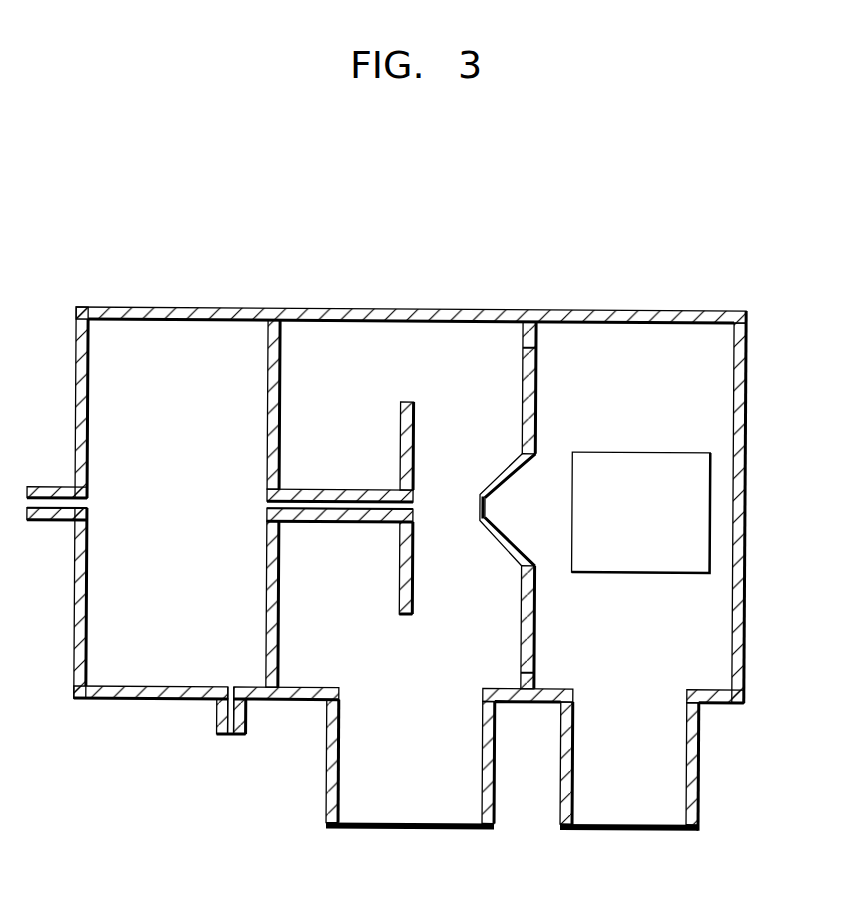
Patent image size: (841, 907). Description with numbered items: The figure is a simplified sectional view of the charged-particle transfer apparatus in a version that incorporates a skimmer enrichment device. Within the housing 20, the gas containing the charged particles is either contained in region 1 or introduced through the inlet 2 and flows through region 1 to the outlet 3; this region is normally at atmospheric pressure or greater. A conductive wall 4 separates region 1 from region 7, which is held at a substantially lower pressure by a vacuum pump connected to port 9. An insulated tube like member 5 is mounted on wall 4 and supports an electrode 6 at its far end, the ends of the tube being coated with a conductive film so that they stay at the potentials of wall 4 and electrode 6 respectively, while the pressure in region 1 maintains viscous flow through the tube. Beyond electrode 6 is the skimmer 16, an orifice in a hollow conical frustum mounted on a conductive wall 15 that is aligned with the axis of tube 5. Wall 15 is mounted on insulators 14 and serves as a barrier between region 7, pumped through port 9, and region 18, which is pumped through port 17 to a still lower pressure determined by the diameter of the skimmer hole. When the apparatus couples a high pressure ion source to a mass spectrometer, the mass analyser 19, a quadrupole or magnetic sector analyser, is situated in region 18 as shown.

The region 1 is at (113, 328).
The inlet 2 is at (28, 487).
The outlet 3 is at (214, 728).
The conductive wall 4 is at (290, 354).
The tube like member 5 is at (339, 488).
The electrode 6 is at (420, 414).
The region 7 is at (307, 668).
The port 9 is at (440, 807).
The insulators 14 is at (536, 340).
The conductive wall 15 is at (536, 414).
The skimmer 16 is at (480, 527).
The port 17 is at (625, 813).
The region 18 is at (705, 676).
The mass analyser 19 is at (712, 484).
The housing 20 is at (238, 306).